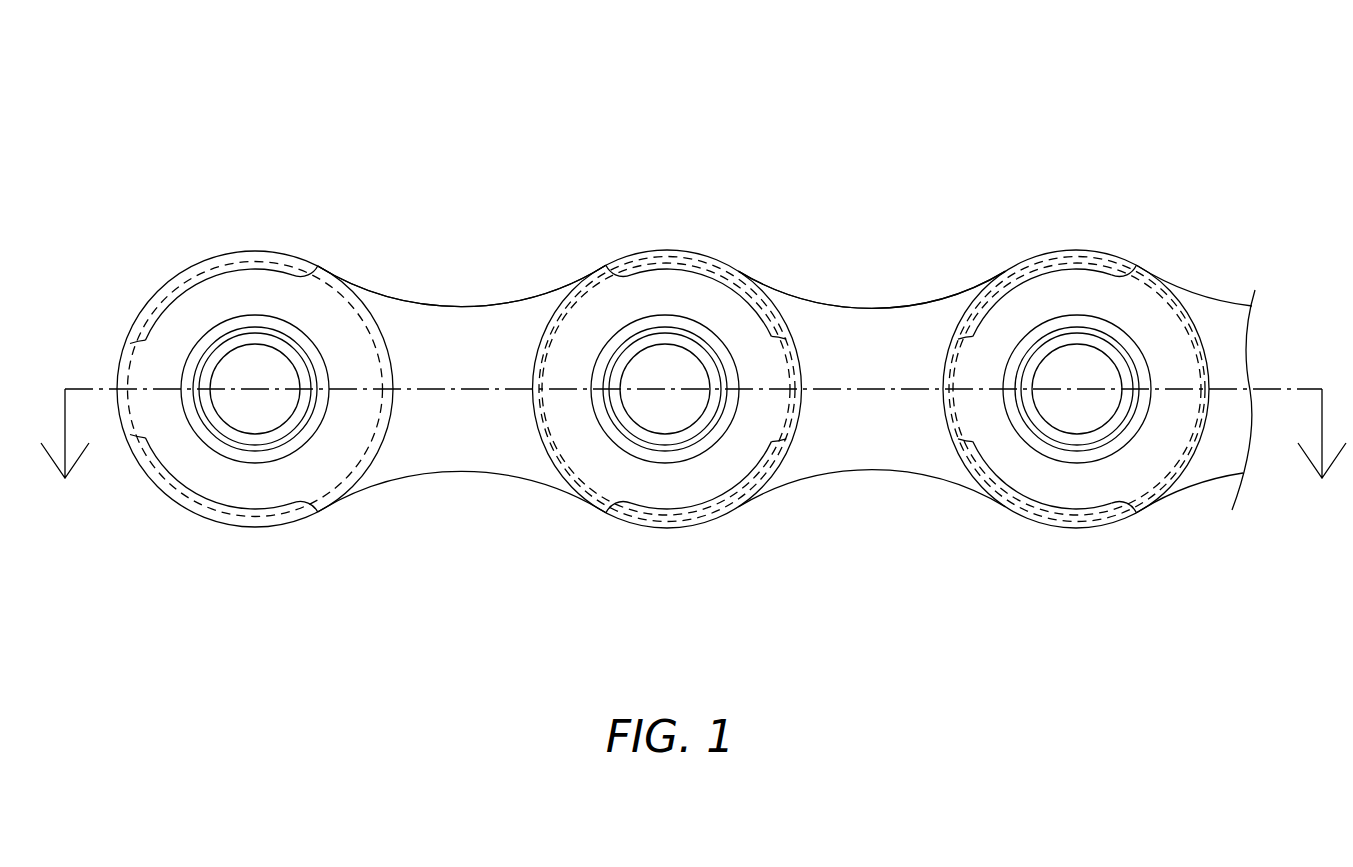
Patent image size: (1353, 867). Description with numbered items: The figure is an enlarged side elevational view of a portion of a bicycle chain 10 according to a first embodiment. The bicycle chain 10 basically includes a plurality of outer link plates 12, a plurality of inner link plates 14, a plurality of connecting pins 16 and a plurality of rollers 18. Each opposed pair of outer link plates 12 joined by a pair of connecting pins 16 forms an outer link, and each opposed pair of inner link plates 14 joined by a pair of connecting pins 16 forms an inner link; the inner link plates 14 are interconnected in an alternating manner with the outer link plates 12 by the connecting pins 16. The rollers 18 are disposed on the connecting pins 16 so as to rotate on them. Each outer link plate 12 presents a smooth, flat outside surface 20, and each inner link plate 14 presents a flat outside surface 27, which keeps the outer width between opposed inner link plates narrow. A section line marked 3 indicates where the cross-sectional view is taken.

The bicycle chain 10 is at (758, 203).
The outer link plate 12 is at (413, 302).
The inner link plate 14 is at (875, 303).
The connecting pin 16 is at (240, 383).
The roller 18 is at (231, 262).
The outside surface 20 is at (485, 375).
The outside surface 27 is at (847, 357).
The section line 3- 3 is at (693, 453).